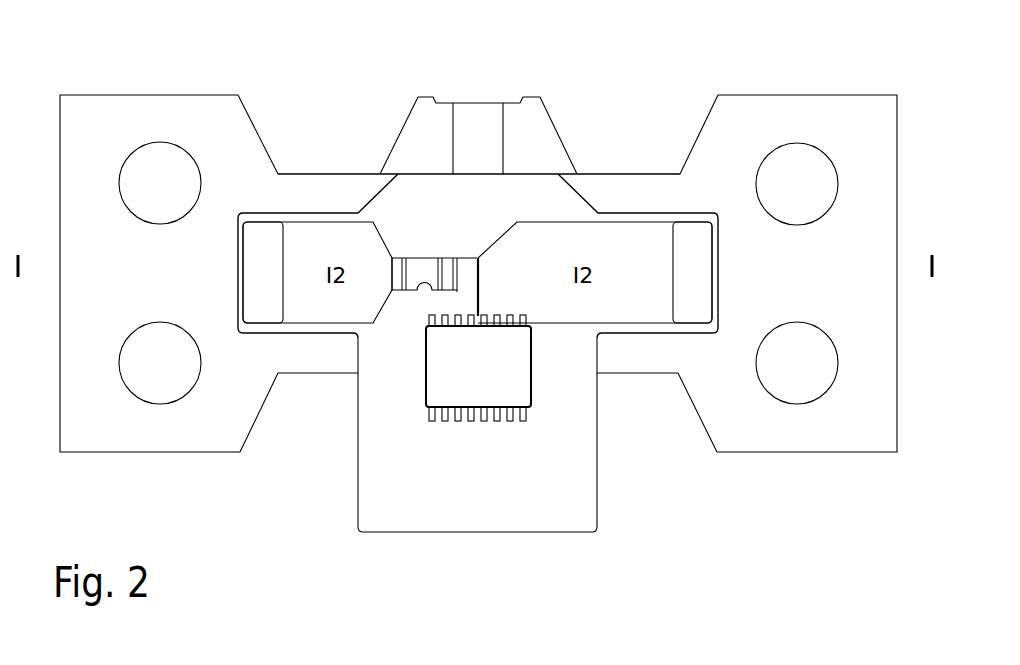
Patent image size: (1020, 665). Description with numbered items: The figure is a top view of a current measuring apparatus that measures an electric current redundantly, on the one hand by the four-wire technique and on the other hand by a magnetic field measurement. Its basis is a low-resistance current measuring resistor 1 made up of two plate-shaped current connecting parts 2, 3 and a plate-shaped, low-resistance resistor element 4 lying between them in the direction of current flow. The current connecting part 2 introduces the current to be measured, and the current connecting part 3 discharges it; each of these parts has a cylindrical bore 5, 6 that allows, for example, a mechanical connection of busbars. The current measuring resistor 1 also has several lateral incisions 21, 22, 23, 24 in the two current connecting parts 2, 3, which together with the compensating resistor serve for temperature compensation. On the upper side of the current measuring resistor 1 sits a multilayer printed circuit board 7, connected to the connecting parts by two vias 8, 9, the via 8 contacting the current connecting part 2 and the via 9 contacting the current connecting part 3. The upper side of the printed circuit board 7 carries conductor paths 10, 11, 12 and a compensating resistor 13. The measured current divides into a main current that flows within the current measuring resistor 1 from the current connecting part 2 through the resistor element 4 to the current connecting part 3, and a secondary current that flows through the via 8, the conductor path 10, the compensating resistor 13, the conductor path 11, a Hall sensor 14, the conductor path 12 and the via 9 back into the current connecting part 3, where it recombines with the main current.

The current measuring resistor 1 is at (662, 572).
The current connecting part 2 is at (97, 115).
The current connecting part 3 is at (875, 108).
The resistor element 4 is at (482, 107).
The cylindrical bore 5 is at (150, 182).
The cylindrical bore 6 is at (820, 192).
The printed circuit board 7 is at (562, 512).
The via 8 is at (262, 292).
The via 9 is at (698, 271).
The conductor path 10 is at (343, 240).
The conductor path 11 is at (440, 298).
The conductor path 12 is at (577, 248).
The compensating resistor 13 is at (422, 267).
The Hall sensor 14 is at (466, 380).
The incision 21 is at (278, 130).
The incision 22 is at (273, 405).
The incision 23 is at (683, 123).
The incision 24 is at (677, 405).